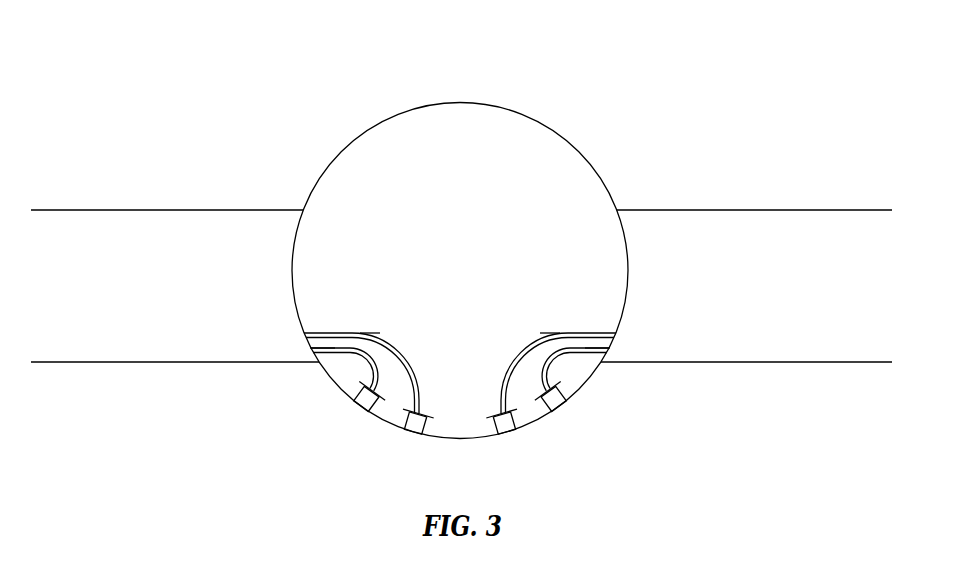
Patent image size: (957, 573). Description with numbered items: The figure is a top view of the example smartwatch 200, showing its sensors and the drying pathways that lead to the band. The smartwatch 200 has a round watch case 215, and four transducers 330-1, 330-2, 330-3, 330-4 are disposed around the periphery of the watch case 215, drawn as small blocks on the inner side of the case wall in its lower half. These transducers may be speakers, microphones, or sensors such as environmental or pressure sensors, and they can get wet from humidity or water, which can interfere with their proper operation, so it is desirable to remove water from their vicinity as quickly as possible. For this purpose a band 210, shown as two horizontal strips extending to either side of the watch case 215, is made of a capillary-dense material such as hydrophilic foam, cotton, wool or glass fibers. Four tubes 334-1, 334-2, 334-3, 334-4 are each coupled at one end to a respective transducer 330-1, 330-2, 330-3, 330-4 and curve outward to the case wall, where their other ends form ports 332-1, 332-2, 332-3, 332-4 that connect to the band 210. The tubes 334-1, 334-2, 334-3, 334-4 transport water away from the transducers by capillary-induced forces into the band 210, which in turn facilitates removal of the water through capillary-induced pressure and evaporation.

The smartwatch 200 is at (85, 88).
The band 210 is at (162, 209).
The watch case 215 is at (522, 114).
The transducer 330-1 is at (366, 412).
The transducer 330-2 is at (412, 435).
The transducer 330-3 is at (510, 435).
The transducer 330-4 is at (556, 412).
The port 332-1 is at (312, 352).
The port 332-2 is at (304, 335).
The port 332-3 is at (616, 335).
The port 332-4 is at (607, 352).
The tube 334-1 is at (335, 347).
The tube 334-2 is at (393, 345).
The tube 334-3 is at (528, 340).
The tube 334-4 is at (590, 347).